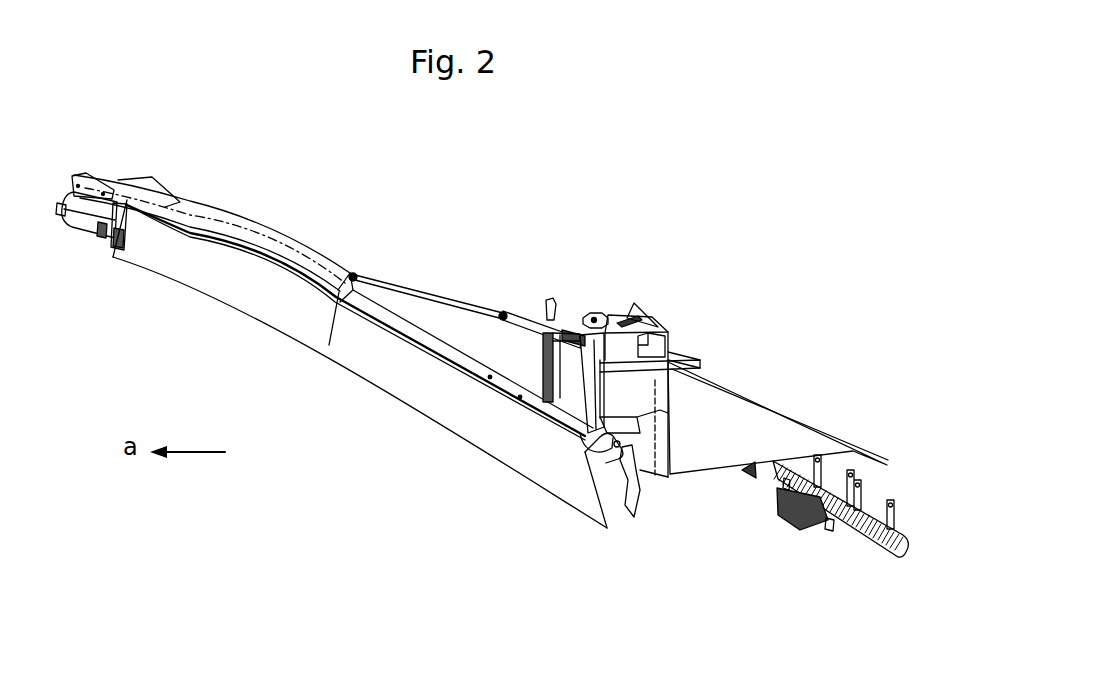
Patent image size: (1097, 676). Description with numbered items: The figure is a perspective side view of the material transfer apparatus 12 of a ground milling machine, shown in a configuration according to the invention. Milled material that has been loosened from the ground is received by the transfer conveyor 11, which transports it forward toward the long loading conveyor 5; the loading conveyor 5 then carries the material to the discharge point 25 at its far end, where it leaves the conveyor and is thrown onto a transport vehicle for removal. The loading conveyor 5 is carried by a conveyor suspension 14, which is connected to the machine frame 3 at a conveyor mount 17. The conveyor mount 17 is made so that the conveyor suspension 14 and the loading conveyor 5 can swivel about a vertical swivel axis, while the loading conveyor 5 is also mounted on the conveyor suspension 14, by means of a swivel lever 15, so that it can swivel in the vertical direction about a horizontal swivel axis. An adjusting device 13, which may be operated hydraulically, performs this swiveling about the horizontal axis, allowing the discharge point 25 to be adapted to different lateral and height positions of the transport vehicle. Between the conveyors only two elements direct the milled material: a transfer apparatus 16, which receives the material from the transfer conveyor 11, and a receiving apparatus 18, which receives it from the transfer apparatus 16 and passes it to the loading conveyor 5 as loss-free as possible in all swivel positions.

The discharge point 25 is at (82, 177).
The loading conveyor 5 is at (193, 247).
The material transfer apparatus 12 is at (694, 256).
The adjusting device 13 is at (518, 318).
The conveyor mount 17 is at (592, 316).
The machine frame 3 is at (742, 410).
The transfer conveyor 11 is at (842, 483).
The conveyor suspension 14 is at (580, 402).
The swivel lever 15 is at (603, 460).
The receiving apparatus 18 is at (632, 465).
The transfer apparatus 16 is at (637, 408).